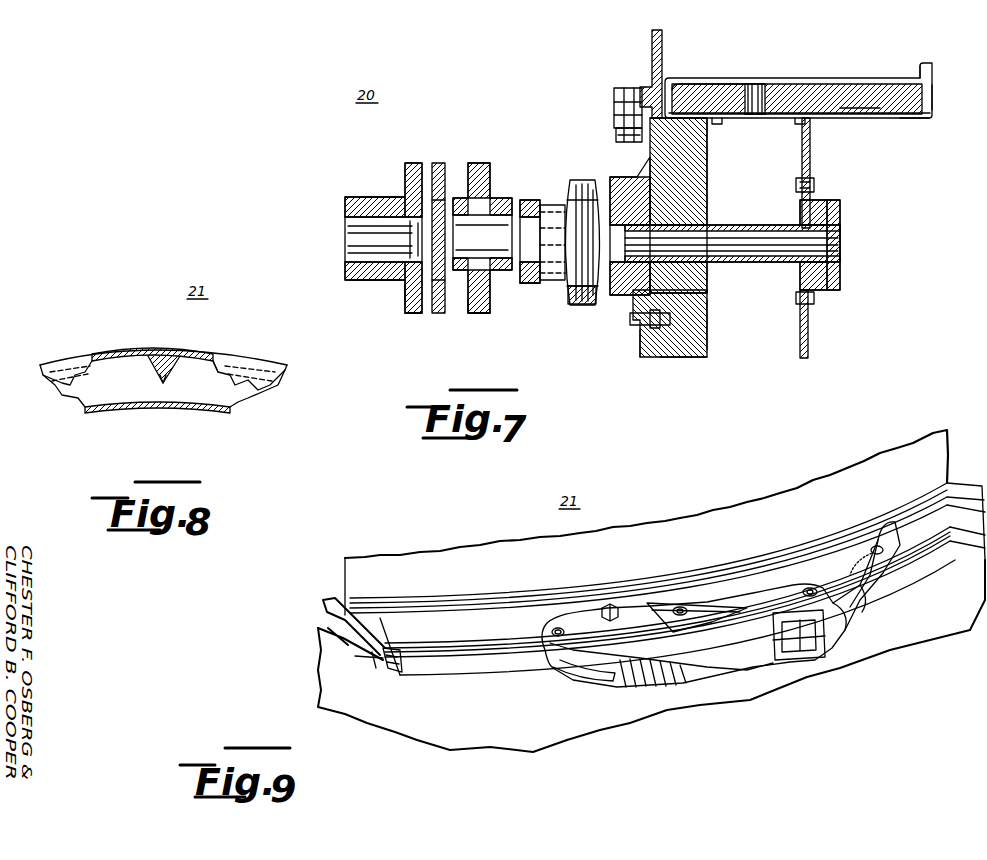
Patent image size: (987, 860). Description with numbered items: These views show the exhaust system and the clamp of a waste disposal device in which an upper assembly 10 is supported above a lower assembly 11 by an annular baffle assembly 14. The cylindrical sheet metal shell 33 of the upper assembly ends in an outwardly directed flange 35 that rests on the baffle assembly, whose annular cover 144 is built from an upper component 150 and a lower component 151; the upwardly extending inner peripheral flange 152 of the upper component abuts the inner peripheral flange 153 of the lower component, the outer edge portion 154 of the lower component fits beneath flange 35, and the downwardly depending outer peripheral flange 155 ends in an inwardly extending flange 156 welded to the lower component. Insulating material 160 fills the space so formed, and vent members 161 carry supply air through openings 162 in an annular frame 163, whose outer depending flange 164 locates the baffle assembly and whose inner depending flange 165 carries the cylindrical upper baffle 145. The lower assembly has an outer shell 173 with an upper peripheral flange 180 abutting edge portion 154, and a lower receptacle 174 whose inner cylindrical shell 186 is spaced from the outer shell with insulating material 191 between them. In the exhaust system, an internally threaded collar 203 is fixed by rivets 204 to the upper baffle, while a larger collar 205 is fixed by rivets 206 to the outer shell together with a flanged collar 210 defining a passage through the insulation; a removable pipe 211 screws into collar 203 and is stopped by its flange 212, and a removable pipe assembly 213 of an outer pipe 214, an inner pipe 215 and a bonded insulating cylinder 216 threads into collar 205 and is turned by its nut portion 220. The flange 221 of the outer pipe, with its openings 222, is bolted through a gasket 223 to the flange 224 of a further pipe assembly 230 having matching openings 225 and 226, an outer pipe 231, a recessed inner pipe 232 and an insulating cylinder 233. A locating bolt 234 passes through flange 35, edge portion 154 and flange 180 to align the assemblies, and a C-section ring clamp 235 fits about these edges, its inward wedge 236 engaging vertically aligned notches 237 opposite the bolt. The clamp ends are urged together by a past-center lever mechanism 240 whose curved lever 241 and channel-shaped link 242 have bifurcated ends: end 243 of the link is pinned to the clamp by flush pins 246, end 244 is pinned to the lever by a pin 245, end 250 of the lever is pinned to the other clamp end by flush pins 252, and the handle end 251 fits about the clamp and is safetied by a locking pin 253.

In FIG. 9, the upper assembly 10 is at (365, 555).
In FIG. 9, the lower assembly 11 is at (320, 660).
In FIG. 7, the annular baffle assembly 14 is at (925, 117).
In FIG. 9, the annular baffle assembly 14 is at (333, 600).
In FIG. 7, the cylindrical sheet metal shell 33 is at (662, 58).
In FIG. 9, the cylindrical sheet metal shell 33 is at (405, 565).
In FIG. 7, the outwardly directed flange 35 is at (616, 100).
In FIG. 8, the outwardly directed flange 35 is at (128, 385).
In FIG. 9, the outwardly directed flange 35 is at (395, 668).
In FIG. 7, the annular cover 144 is at (873, 77).
In FIG. 7, the upper baffle 145 is at (810, 152).
In FIG. 7, the upper component 150 is at (830, 85).
In FIG. 7, the lower component 151 is at (898, 118).
In FIG. 7, the inner peripheral flange 152 is at (925, 70).
In FIG. 7, the inner peripheral flange 153 is at (937, 90).
In FIG. 7, the outer edge portion 154 is at (614, 108).
In FIG. 9, the outer edge portion 154 is at (380, 662).
In FIG. 7, the outer peripheral flange 155 is at (680, 90).
In FIG. 7, the inwardly extending flange 156 is at (715, 80).
In FIG. 7, the insulating material 160 is at (860, 108).
In FIG. 7, the vent members 161 is at (757, 82).
In FIG. 7, the openings 162 is at (752, 113).
In FIG. 7, the annular frame 163 is at (762, 118).
In FIG. 7, the downwardly depending flange 164 is at (720, 122).
In FIG. 7, the downwardly depending flange 165 is at (800, 130).
In FIG. 7, the outer shell 173 is at (645, 355).
In FIG. 9, the outer shell 173 is at (492, 730).
In FIG. 7, the lower receptacle 174 is at (710, 339).
In FIG. 7, the upper peripheral flange 180 is at (614, 122).
In FIG. 9, the upper peripheral flange 180 is at (360, 660).
In FIG. 7, the inner cylindrical shell 186 is at (710, 325).
In FIG. 7, the insulating material 191 is at (695, 356).
In FIG. 7, the internally threaded collar 203 is at (822, 200).
In FIG. 7, the rivets 204 is at (818, 298).
In FIG. 7, the internally threaded collar 205 is at (622, 182).
In FIG. 7, the rivets 206 is at (625, 325).
In FIG. 7, the flanged collar 210 is at (707, 179).
In FIG. 7, the removable pipe 211 is at (745, 264).
In FIG. 7, the flange 212 is at (842, 210).
In FIG. 7, the pipe assembly 213 is at (555, 194).
In FIG. 7, the outer pipe 214 is at (538, 202).
In FIG. 7, the inner pipe 215 is at (482, 237).
In FIG. 7, the cylinder 216 is at (528, 284).
In FIG. 7, the nut portion 220 is at (567, 187).
In FIG. 7, the flange 221 is at (480, 165).
In FIG. 7, the openings 222 is at (490, 310).
In FIG. 7, the gasket 223 is at (440, 180).
In FIG. 7, the flange 224 is at (413, 314).
In FIG. 7, the openings 225 is at (433, 175).
In FIG. 7, the openings 226 is at (404, 297).
In FIG. 7, the pipe assembly 230 is at (398, 180).
In FIG. 7, the outer pipe 231 is at (384, 197).
In FIG. 7, the inner pipe 232 is at (383, 239).
In FIG. 7, the cylinder 233 is at (362, 282).
In FIG. 7, the locating bolt 234 is at (630, 86).
In FIG. 9, the locating bolt 234 is at (612, 604).
In FIG. 8, the ring clamp 235 is at (232, 368).
In FIG. 9, the ring clamp 235 is at (400, 625).
In FIG. 8, the wedge 236 is at (157, 352).
In FIG. 8, the notches 237 is at (168, 385).
In FIG. 9, the past-center lever mechanism 240 is at (847, 648).
In FIG. 9, the lever 241 is at (880, 627).
In FIG. 9, the connecting link 242 is at (690, 683).
In FIG. 9, the bifurcated end 243 is at (575, 673).
In FIG. 9, the bifurcated end 244 is at (800, 661).
In FIG. 9, the pin 245 is at (810, 589).
In FIG. 9, the pins 246 is at (558, 628).
In FIG. 9, the bifurcated end 250 is at (718, 598).
In FIG. 9, the bifurcated end 251 is at (873, 545).
In FIG. 9, the pins 252 is at (680, 607).
In FIG. 9, the locking pin 253 is at (885, 545).